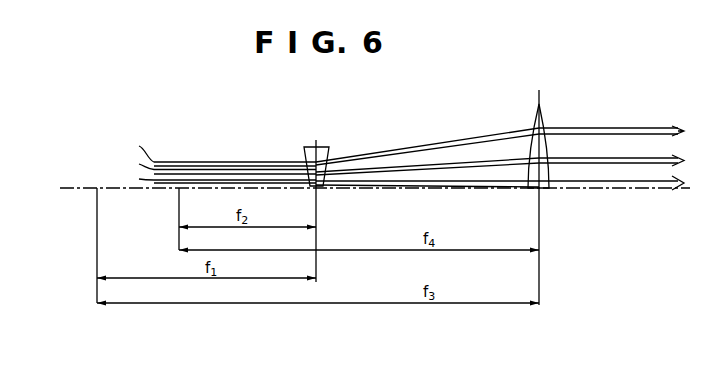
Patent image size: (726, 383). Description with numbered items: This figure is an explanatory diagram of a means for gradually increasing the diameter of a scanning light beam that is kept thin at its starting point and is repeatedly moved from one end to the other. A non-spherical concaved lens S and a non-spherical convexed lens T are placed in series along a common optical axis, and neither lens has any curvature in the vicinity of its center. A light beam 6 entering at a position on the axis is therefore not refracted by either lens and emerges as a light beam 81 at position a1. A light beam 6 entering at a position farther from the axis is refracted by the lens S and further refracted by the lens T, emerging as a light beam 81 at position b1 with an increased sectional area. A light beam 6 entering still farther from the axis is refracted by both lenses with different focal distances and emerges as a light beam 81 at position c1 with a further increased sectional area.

The light beam 6 is at (332, 148).
The light beam 81 is at (622, 144).
The non-spherical concaved lens S is at (316, 158).
The non-spherical convexed lens T is at (538, 133).
The position c1 is at (684, 131).
The position b1 is at (684, 160).
The position a1 is at (684, 183).